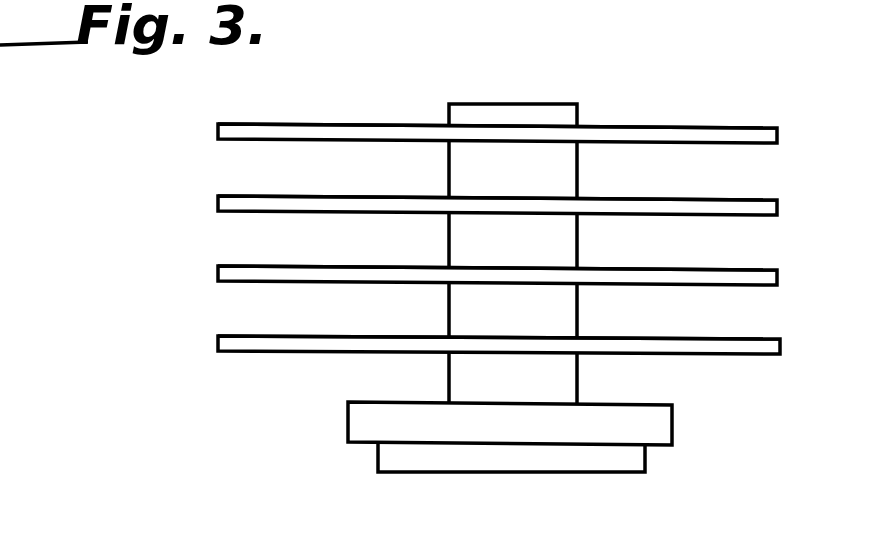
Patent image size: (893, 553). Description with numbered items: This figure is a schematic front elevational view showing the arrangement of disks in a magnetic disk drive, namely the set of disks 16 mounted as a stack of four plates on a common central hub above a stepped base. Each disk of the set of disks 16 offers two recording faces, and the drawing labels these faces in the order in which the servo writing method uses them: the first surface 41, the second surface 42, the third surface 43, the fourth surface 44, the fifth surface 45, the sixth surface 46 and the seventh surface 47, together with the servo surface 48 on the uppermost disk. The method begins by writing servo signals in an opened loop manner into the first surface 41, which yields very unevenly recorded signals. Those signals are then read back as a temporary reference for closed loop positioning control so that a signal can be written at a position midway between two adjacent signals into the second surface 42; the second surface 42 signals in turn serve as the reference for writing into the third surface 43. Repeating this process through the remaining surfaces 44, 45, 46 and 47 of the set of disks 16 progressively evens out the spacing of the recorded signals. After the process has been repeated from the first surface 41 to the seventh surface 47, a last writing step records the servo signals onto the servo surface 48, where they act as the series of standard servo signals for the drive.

The set of disks 16 is at (462, 226).
The first surface 41 is at (761, 355).
The second surface 42 is at (754, 320).
The third surface 43 is at (800, 281).
The fourth surface 44 is at (733, 258).
The fifth surface 45 is at (770, 216).
The sixth surface 46 is at (742, 186).
The seventh surface 47 is at (770, 144).
The servo surface 48 is at (730, 127).